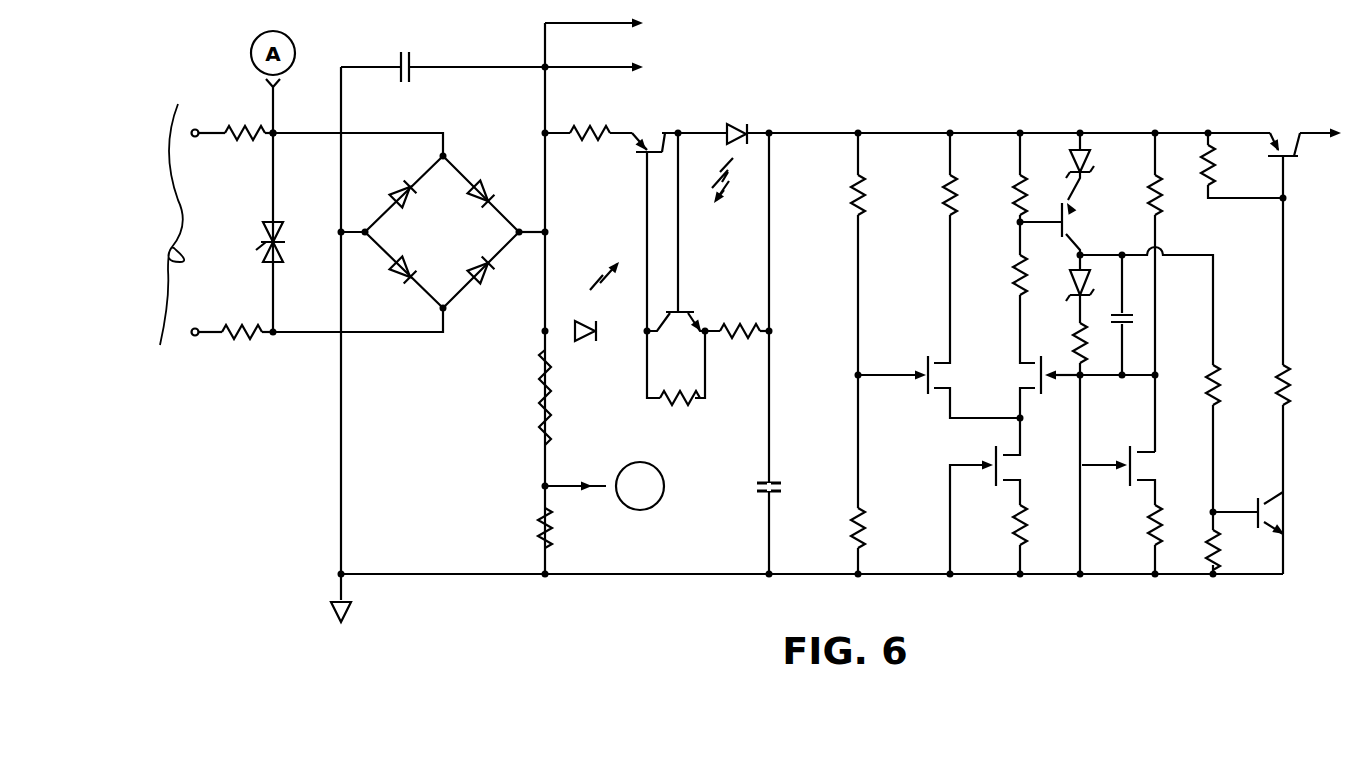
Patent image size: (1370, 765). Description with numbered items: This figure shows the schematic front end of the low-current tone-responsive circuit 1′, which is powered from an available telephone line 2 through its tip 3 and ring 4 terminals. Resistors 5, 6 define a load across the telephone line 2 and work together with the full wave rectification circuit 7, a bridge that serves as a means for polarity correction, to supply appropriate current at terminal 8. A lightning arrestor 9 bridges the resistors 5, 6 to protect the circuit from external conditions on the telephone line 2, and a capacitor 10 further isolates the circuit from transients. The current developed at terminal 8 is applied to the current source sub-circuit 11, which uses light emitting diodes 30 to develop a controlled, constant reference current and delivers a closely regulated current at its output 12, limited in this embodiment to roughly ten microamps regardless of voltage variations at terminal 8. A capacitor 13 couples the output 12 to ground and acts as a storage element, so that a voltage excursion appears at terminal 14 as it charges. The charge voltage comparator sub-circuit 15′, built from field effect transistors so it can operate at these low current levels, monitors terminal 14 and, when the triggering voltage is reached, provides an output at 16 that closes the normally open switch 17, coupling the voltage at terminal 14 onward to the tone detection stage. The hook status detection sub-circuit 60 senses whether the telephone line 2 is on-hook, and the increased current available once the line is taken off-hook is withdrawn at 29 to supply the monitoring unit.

The tone-responsive circuit 1′ is at (1020, 110).
The telephone line 2 is at (183, 224).
The tip terminal 3 is at (199, 139).
The ring terminal 4 is at (197, 328).
The resistor 5 is at (250, 140).
The resistor 6 is at (233, 329).
The full wave rectification circuit 7 is at (434, 244).
The terminal 8 is at (531, 229).
The lightning arrestor 9 is at (286, 240).
The capacitor 10 is at (401, 56).
The current source sub-circuit 11 is at (704, 262).
The output of current source sub-circuit 12 is at (766, 128).
The capacitor 13 is at (758, 502).
The terminal 14 is at (780, 131).
The charge voltage comparator sub-circuit 15′ is at (1072, 432).
The output of charge voltage comparator sub-circuit 16 is at (1272, 185).
The normally open switch 17 is at (1292, 148).
The increased current supply output 29 is at (633, 23).
The light emitting diodes 30 is at (726, 126).
The hook status detection sub-circuit 60 is at (500, 459).